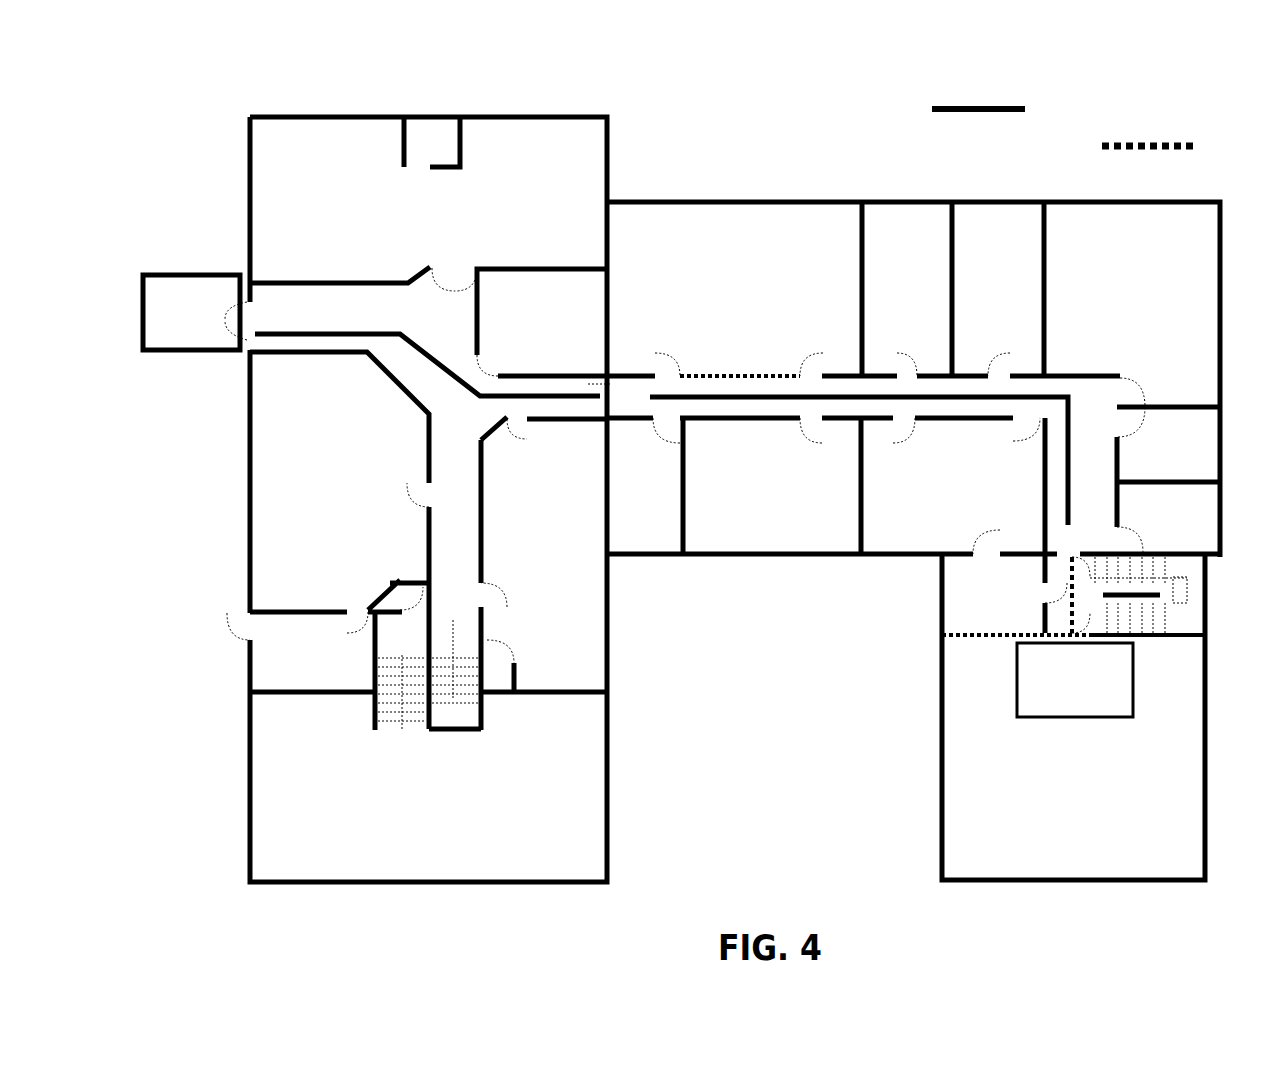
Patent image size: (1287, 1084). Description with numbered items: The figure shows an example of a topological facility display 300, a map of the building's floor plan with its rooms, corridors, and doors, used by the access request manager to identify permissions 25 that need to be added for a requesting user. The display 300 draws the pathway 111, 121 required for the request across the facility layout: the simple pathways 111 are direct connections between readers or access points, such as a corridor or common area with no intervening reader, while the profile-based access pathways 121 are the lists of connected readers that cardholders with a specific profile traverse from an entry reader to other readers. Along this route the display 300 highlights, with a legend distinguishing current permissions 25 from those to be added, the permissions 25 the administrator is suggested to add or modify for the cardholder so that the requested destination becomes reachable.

The topological facility display 300 is at (702, 461).
The permissions 25 is at (262, 338).
The pathway 111 is at (663, 513).
The profile-based access pathway 121 is at (425, 357).